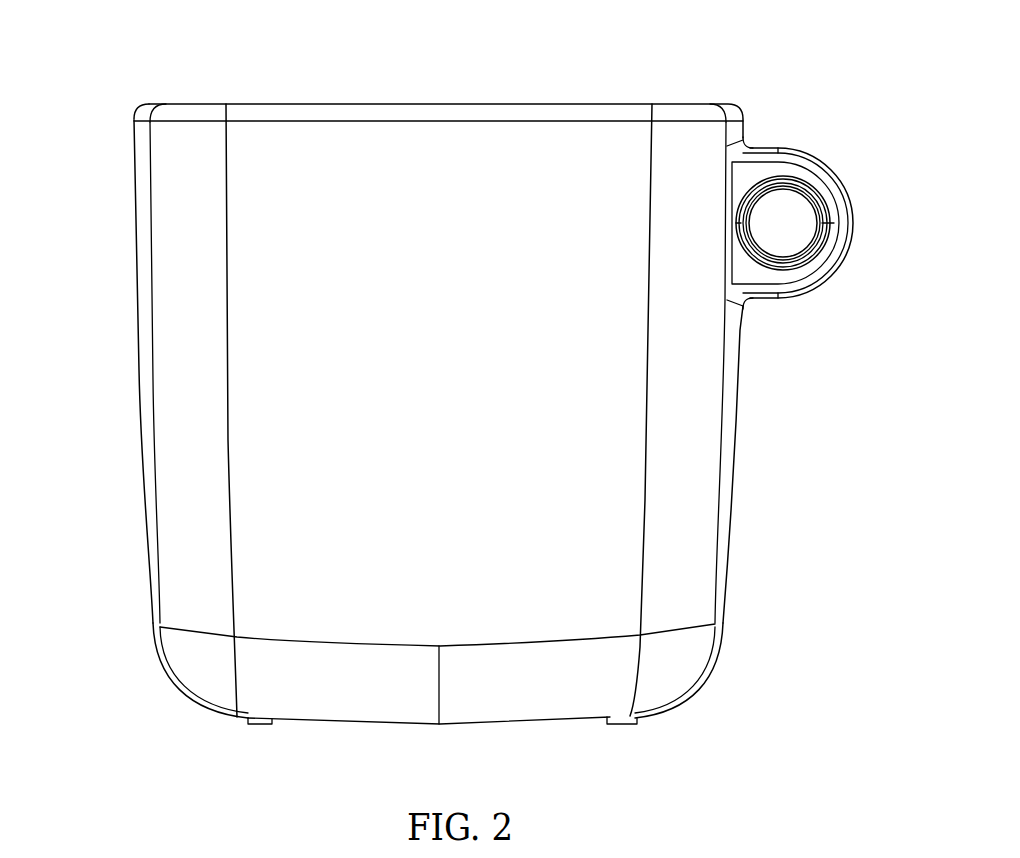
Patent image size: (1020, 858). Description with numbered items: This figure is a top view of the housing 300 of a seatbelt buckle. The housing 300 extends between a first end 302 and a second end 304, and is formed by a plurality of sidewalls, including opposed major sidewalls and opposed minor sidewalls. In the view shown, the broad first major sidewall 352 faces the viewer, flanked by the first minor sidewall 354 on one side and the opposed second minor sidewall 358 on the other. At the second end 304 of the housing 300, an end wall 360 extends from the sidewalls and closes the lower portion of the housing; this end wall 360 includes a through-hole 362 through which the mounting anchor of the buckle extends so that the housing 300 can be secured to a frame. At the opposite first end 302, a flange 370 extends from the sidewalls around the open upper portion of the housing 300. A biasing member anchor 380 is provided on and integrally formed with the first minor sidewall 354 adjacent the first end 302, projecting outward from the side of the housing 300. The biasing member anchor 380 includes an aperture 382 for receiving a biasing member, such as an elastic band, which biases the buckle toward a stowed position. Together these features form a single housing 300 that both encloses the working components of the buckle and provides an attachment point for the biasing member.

The housing 300 is at (126, 43).
The first end 302 is at (596, 106).
The second end 304 is at (635, 742).
The first major sidewall 352 is at (482, 403).
The first minor sidewall 354 is at (740, 416).
The second minor sidewall 358 is at (138, 360).
The end wall 360 is at (240, 726).
The through-hole 362 is at (400, 726).
The flange 370 is at (333, 114).
The biasing member anchor 380 is at (817, 174).
The aperture 382 is at (784, 236).